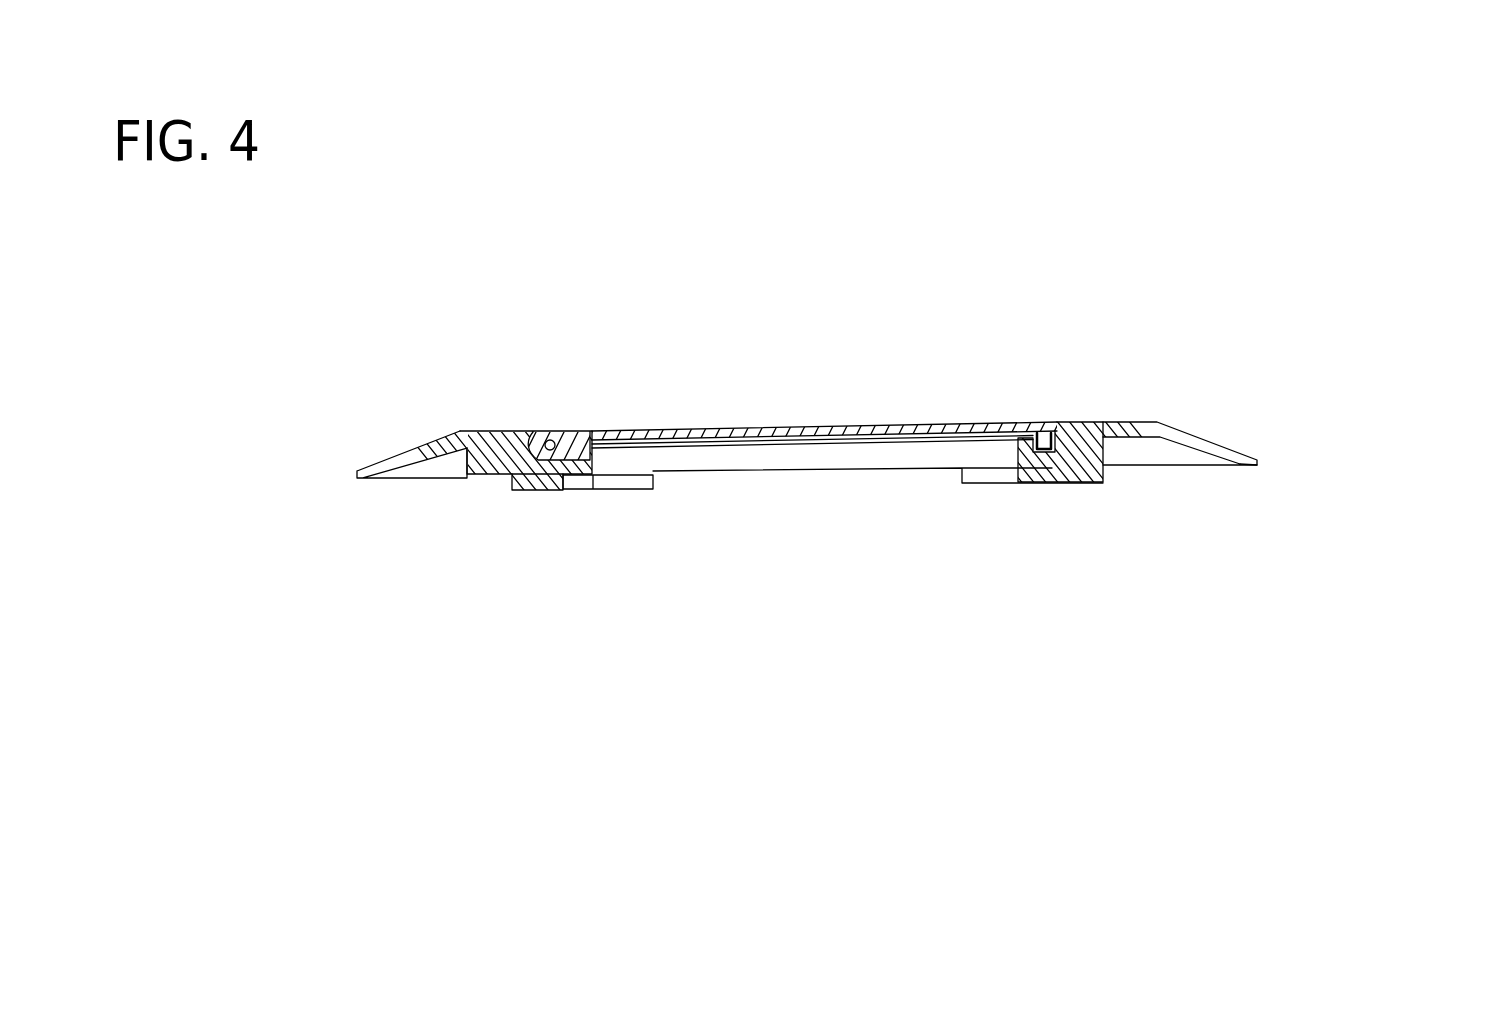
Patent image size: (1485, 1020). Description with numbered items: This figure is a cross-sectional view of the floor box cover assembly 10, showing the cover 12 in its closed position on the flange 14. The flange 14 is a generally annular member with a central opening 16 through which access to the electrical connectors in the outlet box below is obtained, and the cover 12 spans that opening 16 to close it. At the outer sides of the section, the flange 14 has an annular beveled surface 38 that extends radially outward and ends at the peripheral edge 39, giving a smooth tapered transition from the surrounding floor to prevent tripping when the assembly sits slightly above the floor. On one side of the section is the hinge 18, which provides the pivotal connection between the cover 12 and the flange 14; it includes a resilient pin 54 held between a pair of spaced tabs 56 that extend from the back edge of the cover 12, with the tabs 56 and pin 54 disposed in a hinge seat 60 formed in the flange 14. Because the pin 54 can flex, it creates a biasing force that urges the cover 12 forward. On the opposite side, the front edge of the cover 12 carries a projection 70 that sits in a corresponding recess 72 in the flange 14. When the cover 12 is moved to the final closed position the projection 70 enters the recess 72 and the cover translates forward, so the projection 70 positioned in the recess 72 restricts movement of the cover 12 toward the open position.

The floor box cover assembly 10 is at (1202, 253).
The cover 12 is at (800, 425).
The flange 14 is at (1198, 430).
The opening 16 is at (807, 471).
The hinge 18 is at (587, 413).
The beveled surface 38 is at (1258, 463).
The peripheral edge 39 is at (357, 473).
The pin 54 is at (531, 432).
The tabs 56 is at (553, 432).
The hinge seat 60 is at (541, 489).
The projection 70 is at (1043, 440).
The recess 72 is at (1101, 480).